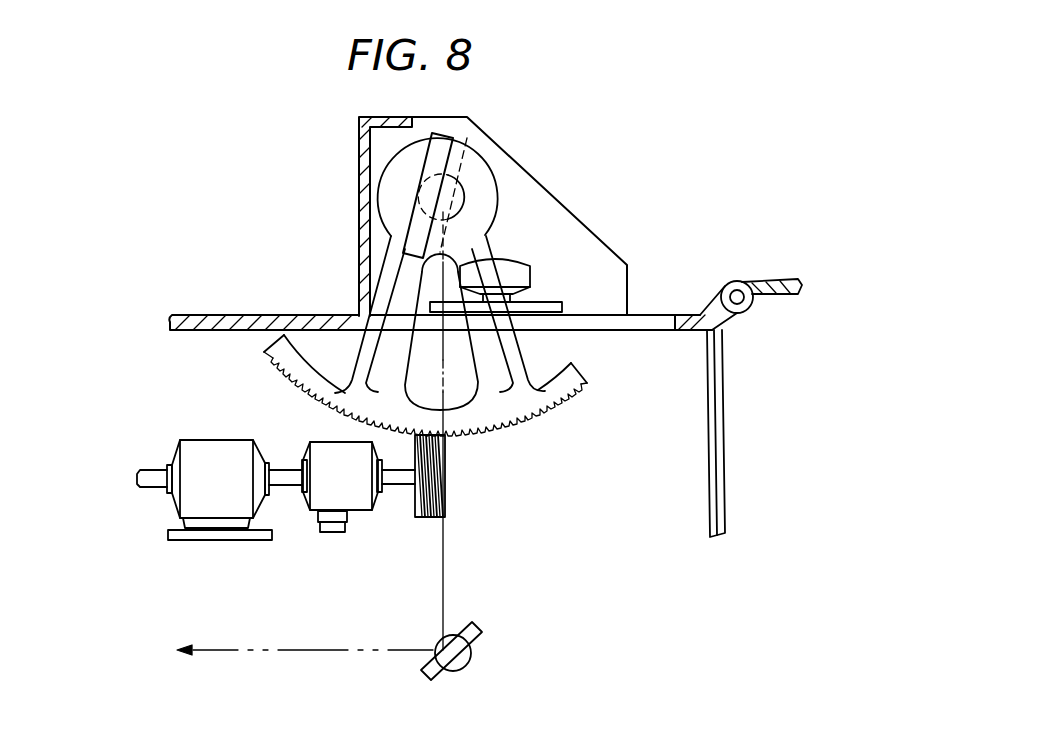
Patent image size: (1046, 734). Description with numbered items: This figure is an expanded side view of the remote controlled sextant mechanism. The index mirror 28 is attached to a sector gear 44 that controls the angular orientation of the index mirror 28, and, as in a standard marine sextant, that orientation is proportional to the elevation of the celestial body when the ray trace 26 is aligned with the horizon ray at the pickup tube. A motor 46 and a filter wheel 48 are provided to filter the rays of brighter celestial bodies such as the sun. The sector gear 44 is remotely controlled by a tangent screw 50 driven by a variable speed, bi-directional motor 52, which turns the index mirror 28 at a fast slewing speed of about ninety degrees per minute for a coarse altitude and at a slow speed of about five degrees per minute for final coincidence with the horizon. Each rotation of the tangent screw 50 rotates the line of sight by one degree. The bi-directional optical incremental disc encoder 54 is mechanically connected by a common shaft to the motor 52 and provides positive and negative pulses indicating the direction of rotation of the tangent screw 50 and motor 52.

The ray trace 26 is at (493, 92).
The index mirror 28 is at (417, 163).
The sector gear 44 is at (280, 368).
The motor 46 is at (498, 257).
The filter wheel 48 is at (558, 300).
The tangent screw 50 is at (433, 498).
The variable speed, bi-directional motor 52 is at (198, 452).
The bi-directional optical incremental disc encoder 54 is at (333, 523).